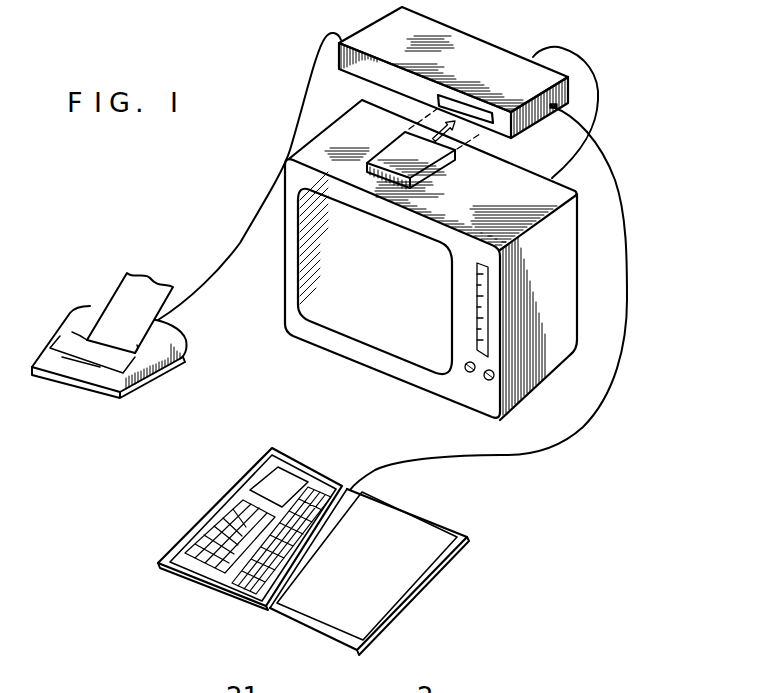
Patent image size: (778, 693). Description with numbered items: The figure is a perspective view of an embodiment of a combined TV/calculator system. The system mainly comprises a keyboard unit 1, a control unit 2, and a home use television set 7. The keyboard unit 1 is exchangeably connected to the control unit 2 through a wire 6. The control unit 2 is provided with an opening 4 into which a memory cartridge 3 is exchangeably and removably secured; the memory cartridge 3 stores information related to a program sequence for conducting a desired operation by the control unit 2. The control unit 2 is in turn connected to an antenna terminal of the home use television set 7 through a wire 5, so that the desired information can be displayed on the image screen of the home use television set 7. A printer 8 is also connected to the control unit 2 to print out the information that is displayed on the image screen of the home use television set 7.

The keyboard unit 1 is at (240, 474).
The control unit 2 is at (386, 24).
The memory cartridge 3 is at (433, 163).
The opening 4 is at (438, 98).
The wire 5 is at (598, 85).
The wire 6 is at (627, 182).
The home use television set 7 is at (285, 265).
The printer 8 is at (68, 313).